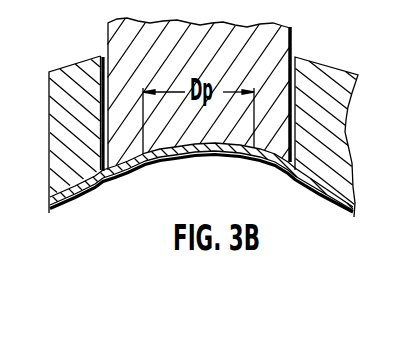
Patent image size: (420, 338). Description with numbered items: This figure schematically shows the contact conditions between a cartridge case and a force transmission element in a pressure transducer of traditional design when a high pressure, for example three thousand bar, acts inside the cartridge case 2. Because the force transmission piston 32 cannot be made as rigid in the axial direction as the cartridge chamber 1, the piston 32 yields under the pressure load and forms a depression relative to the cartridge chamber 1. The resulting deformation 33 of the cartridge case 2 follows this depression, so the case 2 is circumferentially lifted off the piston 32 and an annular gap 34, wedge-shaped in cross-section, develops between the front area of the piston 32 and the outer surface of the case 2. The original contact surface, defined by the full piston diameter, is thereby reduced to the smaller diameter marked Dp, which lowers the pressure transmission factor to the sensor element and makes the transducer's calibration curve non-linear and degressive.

The cartridge chamber 1 is at (75, 100).
The cartridge case 2 is at (83, 188).
The force transmission piston 32 is at (268, 65).
The deformation 33 is at (128, 175).
The annular gap 34 is at (103, 162).